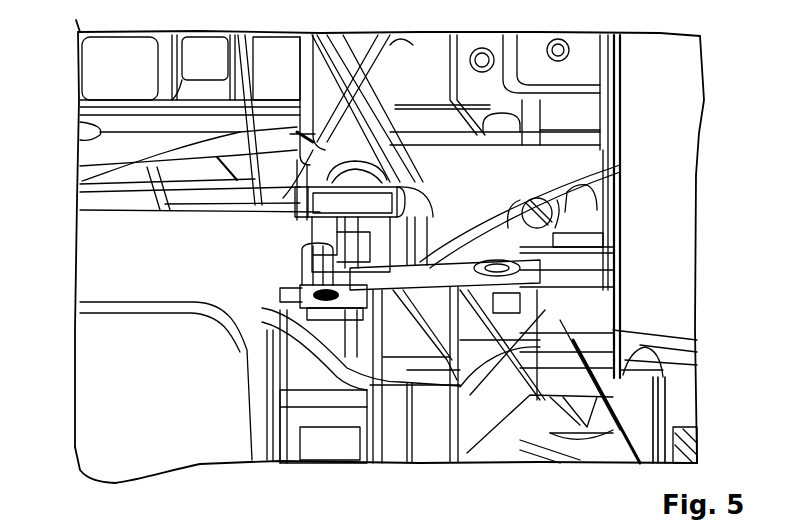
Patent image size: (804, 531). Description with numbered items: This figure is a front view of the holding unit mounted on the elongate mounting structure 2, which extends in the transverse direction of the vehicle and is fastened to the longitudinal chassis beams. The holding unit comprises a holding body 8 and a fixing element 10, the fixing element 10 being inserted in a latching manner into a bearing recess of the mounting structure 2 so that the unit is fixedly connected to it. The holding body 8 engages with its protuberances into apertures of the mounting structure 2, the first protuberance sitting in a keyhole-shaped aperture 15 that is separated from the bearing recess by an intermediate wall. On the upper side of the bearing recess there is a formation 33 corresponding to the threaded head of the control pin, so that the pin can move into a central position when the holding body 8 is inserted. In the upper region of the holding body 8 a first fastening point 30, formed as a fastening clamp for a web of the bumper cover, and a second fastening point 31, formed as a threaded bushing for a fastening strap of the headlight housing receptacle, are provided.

The mounting structure 2 is at (620, 152).
The holding body 8 is at (457, 433).
The fixing element 10 is at (303, 212).
The keyhole-shaped aperture 15 is at (305, 243).
The first fastening point 30 is at (300, 285).
The second fastening point 31 is at (623, 253).
The formation 33 is at (82, 181).